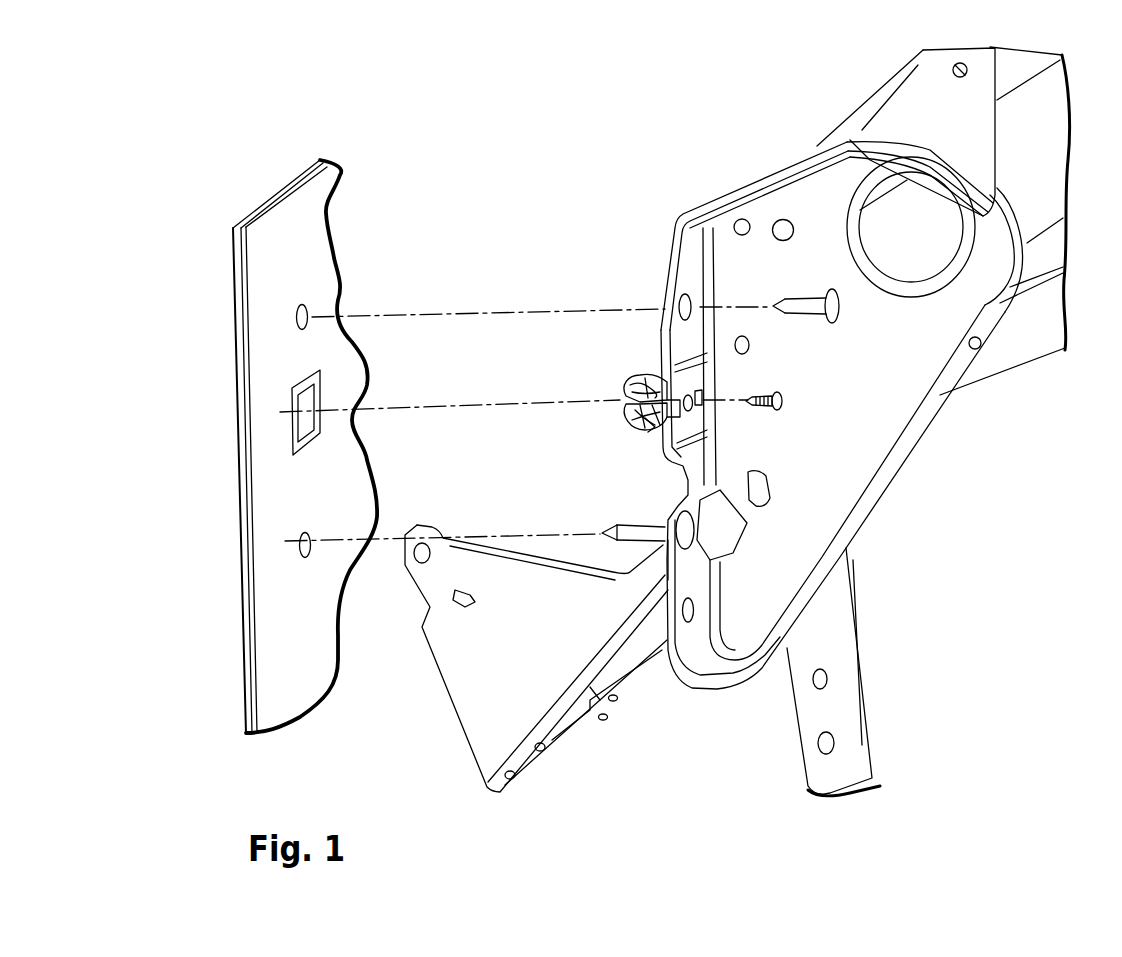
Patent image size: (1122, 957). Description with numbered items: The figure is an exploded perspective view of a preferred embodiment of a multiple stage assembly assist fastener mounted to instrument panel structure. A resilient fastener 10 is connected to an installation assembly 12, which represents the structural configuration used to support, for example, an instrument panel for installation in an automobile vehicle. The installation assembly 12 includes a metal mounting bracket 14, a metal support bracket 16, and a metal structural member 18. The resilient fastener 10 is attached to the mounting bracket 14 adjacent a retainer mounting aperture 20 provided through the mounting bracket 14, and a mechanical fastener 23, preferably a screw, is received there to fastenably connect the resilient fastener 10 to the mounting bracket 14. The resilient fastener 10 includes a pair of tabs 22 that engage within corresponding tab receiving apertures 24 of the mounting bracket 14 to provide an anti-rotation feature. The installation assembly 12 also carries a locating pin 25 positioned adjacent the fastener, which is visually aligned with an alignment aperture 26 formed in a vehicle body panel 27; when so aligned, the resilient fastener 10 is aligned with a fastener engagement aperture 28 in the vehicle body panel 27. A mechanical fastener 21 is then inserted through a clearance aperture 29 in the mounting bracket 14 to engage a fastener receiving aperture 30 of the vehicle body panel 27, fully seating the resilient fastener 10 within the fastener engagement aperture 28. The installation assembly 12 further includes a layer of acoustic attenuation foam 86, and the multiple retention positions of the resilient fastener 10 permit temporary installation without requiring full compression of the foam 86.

The resilient fastener 10 is at (624, 397).
The installation assembly 12 is at (657, 214).
The mounting bracket 14 is at (705, 690).
The support bracket 16 is at (523, 747).
The structural member 18 is at (810, 772).
The retainer mounting aperture 20 is at (686, 396).
The mechanical fastener 21 is at (838, 320).
The tab 22 is at (649, 423).
The mechanical fastener 23 is at (784, 406).
The tab receiving aperture 24 is at (697, 389).
The locating pin 25 is at (610, 527).
The alignment aperture 26 is at (311, 539).
The vehicle body panel 27 is at (310, 233).
The fastener engagement aperture 28 is at (301, 397).
The clearance aperture 29 is at (678, 303).
The fastener receiving aperture 30 is at (307, 306).
The foam 86 is at (860, 108).